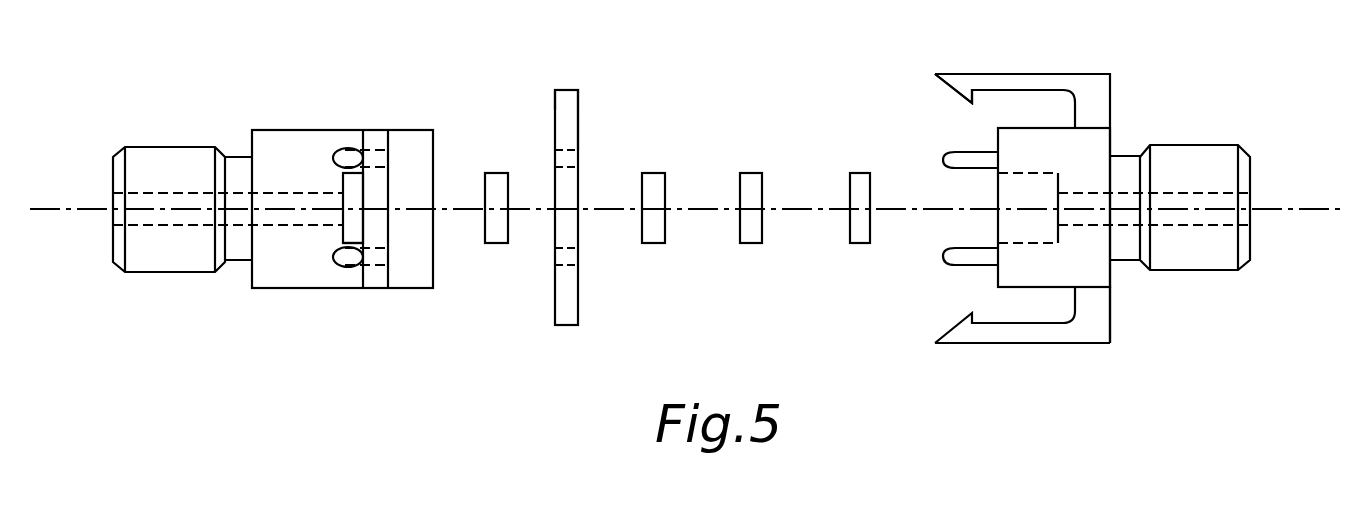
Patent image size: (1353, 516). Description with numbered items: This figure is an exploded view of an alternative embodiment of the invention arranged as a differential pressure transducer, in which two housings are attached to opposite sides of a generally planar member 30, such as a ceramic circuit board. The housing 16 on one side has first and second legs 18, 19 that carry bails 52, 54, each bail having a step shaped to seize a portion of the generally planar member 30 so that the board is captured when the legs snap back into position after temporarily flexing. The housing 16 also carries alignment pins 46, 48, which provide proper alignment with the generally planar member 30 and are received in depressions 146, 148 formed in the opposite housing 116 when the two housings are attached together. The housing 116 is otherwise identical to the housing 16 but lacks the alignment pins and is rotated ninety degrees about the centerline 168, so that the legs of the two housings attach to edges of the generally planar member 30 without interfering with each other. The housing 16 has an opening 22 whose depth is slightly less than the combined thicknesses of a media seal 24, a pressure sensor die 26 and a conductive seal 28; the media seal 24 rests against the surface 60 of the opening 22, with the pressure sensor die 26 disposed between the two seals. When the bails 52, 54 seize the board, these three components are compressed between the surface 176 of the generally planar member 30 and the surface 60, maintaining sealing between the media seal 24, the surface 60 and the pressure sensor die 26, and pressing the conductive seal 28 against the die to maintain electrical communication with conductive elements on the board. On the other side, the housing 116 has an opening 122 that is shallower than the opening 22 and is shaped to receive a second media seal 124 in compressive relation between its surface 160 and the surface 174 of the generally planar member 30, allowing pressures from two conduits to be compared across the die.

The housing 16 is at (1100, 267).
The first leg 18 is at (1057, 83).
The second leg 19 is at (413, 273).
The opening 22 is at (1018, 185).
The media seal 24 is at (858, 228).
The pressure sensor die 26 is at (752, 228).
The conductive seal 28 is at (655, 228).
The generally planar member 30 is at (562, 305).
The alignment pin 46 is at (963, 157).
The alignment pin 48 is at (967, 257).
The bail 52 is at (958, 84).
The bail 54 is at (380, 138).
The surface 60 is at (1027, 222).
The housing 116 is at (267, 272).
The opening 122 is at (353, 190).
The second media seal 124 is at (497, 228).
The depression 146 is at (345, 160).
The depression 148 is at (355, 260).
The surface 160 is at (353, 230).
The centerline 168 is at (1277, 208).
The surface 174 is at (555, 105).
The surface 176 is at (578, 128).